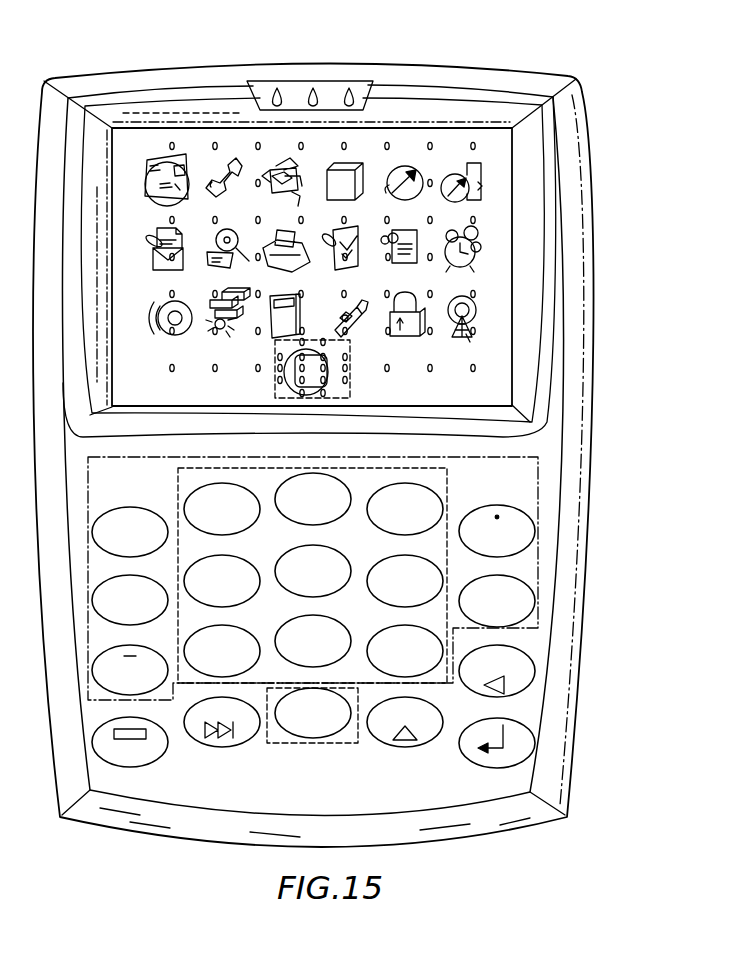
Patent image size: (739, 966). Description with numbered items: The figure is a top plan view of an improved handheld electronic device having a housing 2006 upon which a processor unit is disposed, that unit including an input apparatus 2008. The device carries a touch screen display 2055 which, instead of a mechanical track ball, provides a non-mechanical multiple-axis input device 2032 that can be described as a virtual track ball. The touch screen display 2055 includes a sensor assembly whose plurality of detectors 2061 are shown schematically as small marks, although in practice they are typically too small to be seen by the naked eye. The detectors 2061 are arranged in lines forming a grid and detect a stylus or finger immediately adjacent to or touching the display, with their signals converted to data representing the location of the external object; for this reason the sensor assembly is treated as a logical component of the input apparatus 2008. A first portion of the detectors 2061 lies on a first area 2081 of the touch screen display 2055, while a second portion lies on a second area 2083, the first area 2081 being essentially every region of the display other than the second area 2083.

The housing 2006 is at (482, 63).
The touch screen display 2055 is at (410, 147).
The detectors 2061 is at (278, 382).
The first area 2081 is at (458, 367).
The multiple-axis input device 2032 is at (313, 397).
The second area 2083 is at (350, 392).
The input apparatus 2008 is at (470, 362).